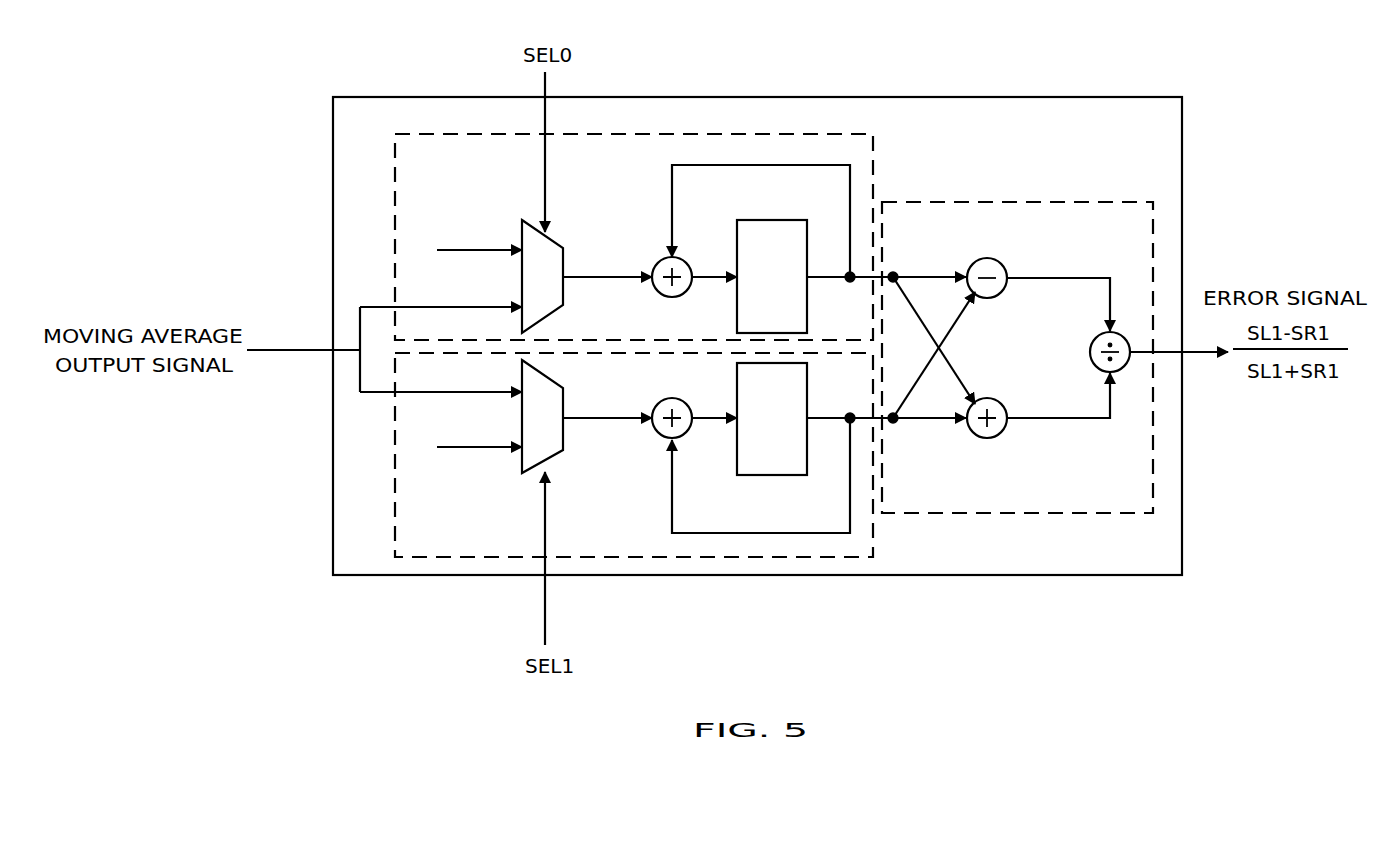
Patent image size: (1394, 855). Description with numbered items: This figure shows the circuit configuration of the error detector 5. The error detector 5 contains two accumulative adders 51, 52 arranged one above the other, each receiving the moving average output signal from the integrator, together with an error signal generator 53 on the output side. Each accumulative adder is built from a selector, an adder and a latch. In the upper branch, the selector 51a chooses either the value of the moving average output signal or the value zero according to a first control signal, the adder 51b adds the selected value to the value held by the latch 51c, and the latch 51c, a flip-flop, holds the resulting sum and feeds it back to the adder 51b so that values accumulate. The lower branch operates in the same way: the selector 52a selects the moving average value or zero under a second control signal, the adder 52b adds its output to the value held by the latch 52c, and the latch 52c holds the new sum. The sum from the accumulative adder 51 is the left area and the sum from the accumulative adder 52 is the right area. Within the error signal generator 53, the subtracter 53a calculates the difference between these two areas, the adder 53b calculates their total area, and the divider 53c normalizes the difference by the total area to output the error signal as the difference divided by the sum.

The error detector 5 is at (1122, 97).
The accumulative adder 51 is at (410, 134).
The selector 51a is at (540, 230).
The adder 51b is at (662, 258).
The latch (flip-flop) 51c is at (790, 220).
The accumulative adder 52 is at (415, 557).
The selector 52a is at (527, 468).
The adder 52b is at (658, 433).
The latch (flip-flop) 52c is at (766, 475).
The error signal generator 53 is at (1120, 202).
The subtracter 53a is at (986, 258).
The adder 53b is at (986, 438).
The divider 53c is at (1090, 350).